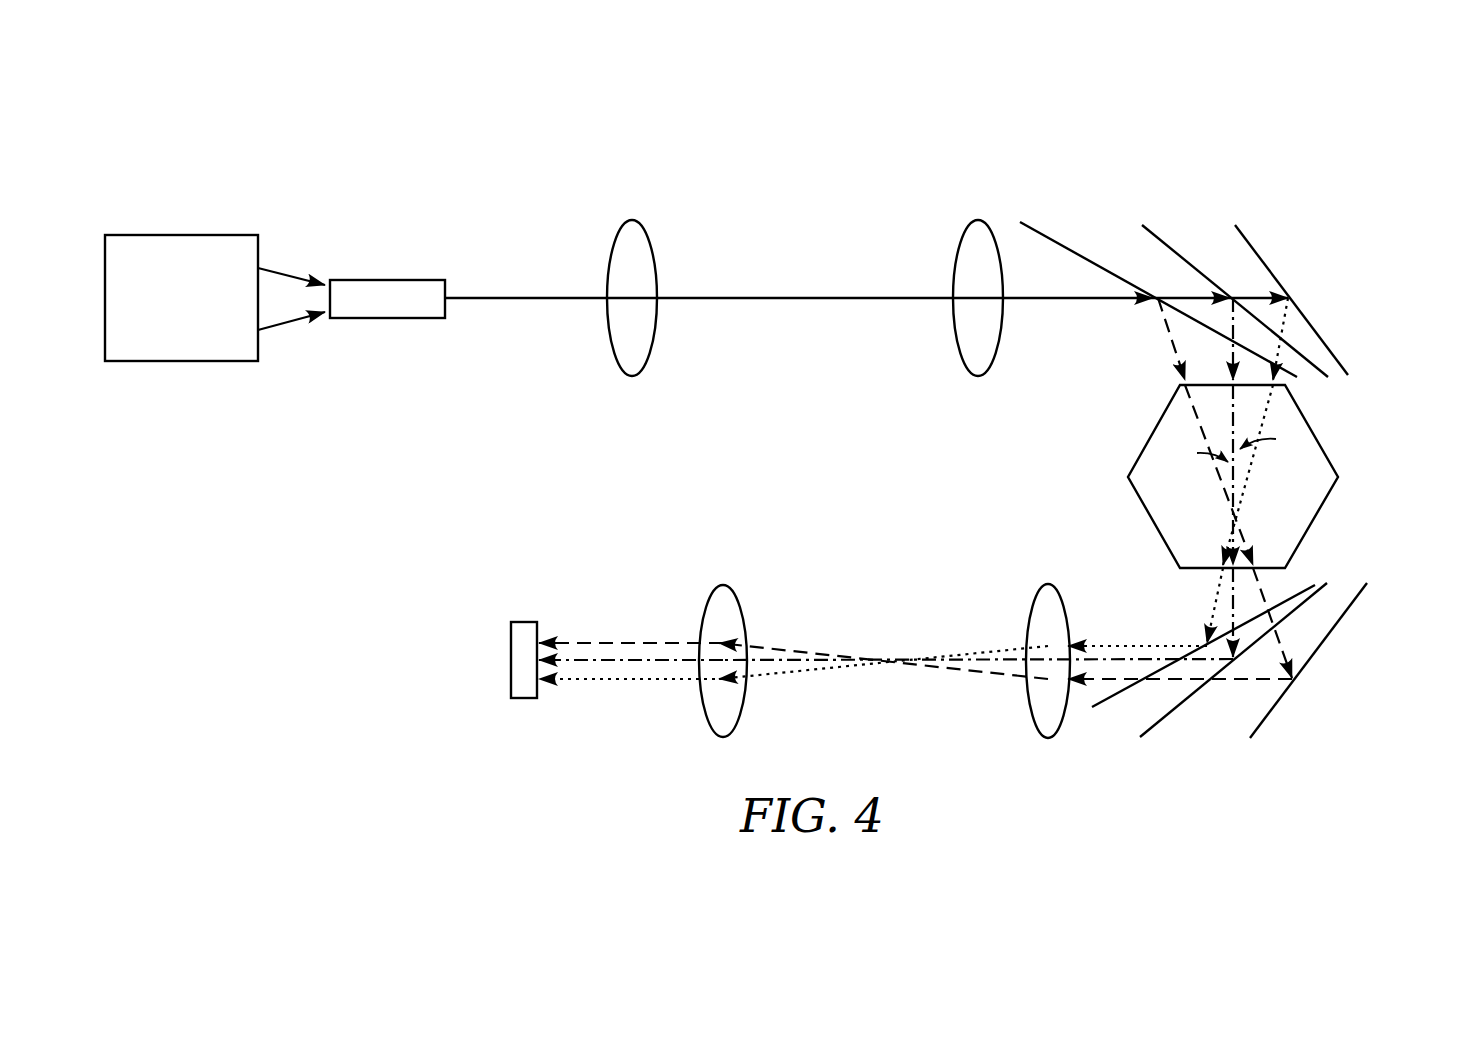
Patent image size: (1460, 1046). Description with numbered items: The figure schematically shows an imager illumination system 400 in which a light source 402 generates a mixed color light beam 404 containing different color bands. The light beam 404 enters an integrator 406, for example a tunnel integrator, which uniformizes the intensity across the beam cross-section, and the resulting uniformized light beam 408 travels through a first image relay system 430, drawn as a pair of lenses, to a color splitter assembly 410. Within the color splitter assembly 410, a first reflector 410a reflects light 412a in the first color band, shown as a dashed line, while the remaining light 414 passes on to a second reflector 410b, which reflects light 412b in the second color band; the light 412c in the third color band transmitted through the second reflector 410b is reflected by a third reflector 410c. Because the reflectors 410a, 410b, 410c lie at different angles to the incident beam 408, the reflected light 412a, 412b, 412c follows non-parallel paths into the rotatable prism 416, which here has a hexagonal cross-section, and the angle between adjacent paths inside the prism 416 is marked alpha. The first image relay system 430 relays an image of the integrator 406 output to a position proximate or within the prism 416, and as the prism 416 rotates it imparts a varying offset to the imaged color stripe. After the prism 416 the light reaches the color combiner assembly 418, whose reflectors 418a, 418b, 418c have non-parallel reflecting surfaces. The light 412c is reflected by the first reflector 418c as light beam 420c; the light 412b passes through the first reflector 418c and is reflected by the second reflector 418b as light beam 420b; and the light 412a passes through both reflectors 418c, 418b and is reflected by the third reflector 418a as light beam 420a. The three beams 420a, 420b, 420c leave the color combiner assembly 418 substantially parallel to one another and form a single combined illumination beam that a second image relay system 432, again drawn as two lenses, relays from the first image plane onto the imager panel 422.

The imager illumination system 400 is at (360, 146).
The light source 402 is at (188, 235).
The light beam 404 is at (282, 270).
The integrator 406 is at (393, 280).
The uniformized light beam 408 is at (525, 297).
The color splitter assembly 410 is at (1349, 219).
The first reflector 410a is at (1050, 237).
The second reflector 410b is at (1162, 237).
The third reflector 410c is at (1247, 237).
The light in the first color band 412a is at (1167, 330).
The light in the second color band 412b is at (1232, 360).
The light in the third color band 412c is at (1287, 322).
The remaining light 414 is at (1183, 297).
The rotatable prism 416 is at (1325, 443).
The color combiner assembly 418 is at (1307, 742).
The third reflector 418a is at (1323, 648).
The second reflector 418b is at (1160, 723).
The first reflector 418c is at (1098, 702).
The light beam 420a is at (1157, 644).
The light beam 420b is at (1098, 657).
The light beam 420c is at (1223, 683).
The imager panel 422 is at (510, 656).
The first image relay system 430 is at (632, 220).
The second image relay system 432 is at (723, 585).